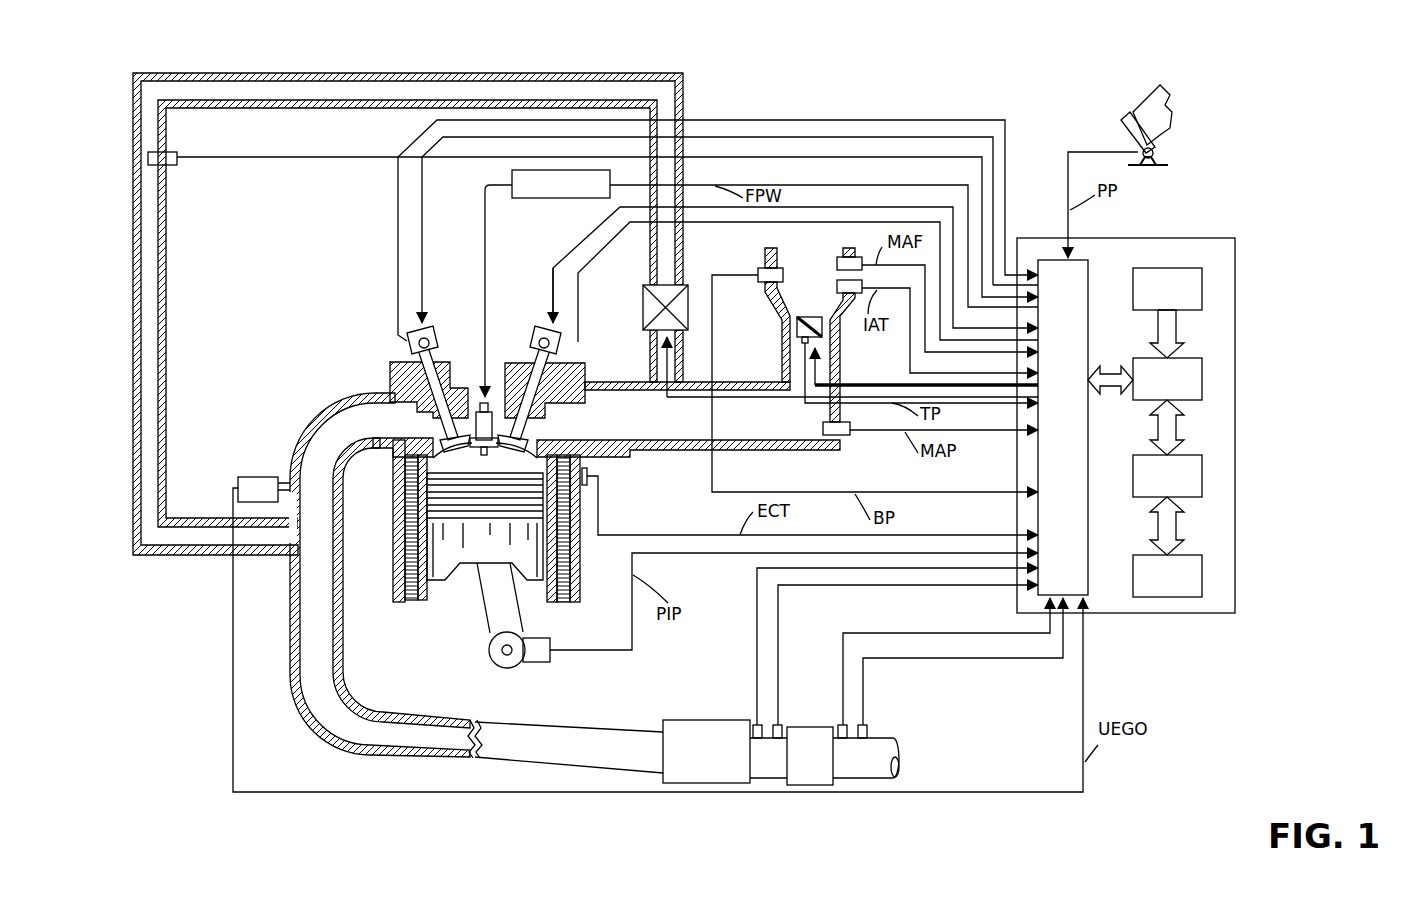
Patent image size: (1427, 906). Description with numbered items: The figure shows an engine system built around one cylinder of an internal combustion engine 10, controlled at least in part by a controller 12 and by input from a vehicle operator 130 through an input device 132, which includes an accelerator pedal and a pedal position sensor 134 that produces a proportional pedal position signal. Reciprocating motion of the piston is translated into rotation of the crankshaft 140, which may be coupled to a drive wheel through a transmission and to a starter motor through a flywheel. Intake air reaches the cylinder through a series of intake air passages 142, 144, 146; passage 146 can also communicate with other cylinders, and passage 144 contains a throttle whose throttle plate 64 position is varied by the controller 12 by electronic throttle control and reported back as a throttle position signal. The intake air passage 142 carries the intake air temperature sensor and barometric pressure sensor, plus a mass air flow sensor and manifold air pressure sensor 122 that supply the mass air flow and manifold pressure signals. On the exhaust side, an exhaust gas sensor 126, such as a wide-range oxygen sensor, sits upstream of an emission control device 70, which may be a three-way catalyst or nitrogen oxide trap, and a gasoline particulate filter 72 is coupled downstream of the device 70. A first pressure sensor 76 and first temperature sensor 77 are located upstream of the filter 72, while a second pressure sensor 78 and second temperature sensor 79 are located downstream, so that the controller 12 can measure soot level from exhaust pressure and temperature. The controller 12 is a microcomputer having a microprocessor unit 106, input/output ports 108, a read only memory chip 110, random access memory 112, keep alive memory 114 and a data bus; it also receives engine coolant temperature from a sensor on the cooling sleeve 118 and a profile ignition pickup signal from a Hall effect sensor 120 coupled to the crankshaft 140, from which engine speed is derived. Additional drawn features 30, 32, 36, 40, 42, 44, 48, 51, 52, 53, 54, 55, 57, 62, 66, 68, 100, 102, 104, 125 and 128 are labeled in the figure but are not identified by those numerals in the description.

The internal combustion engine 10 is at (325, 318).
The controller 12 is at (1238, 240).
The combustion chamber 30 is at (462, 462).
The cylinder walls 32 is at (433, 587).
The piston 36 is at (470, 555).
The crankshaft 40 is at (500, 668).
The intake passage 42 is at (810, 352).
The intake manifold 44 is at (688, 419).
The exhaust passage 48 is at (476, 583).
The intake cam actuator 51 is at (540, 335).
The intake valve 52 is at (528, 425).
The exhaust cam actuator 53 is at (430, 335).
The exhaust valve 54 is at (443, 423).
The intake valve position sensor 55 is at (555, 350).
The exhaust valve position sensor 57 is at (416, 350).
The throttle 62 is at (822, 330).
The throttle plate 64 is at (795, 320).
The fuel injector 66 is at (490, 395).
The electronic driver 68 is at (590, 200).
The emission control device 70 is at (725, 751).
The gasoline particulate filter 72 is at (843, 756).
The first pressure sensor 76 is at (756, 724).
The first temperature sensor 77 is at (780, 724).
The second pressure sensor 78 is at (840, 727).
The second temperature sensor 79 is at (866, 727).
The engine system 100 is at (1335, 112).
The microprocessor unit (CPU) 102 is at (1205, 375).
The input/output ports 104 is at (1092, 265).
The microprocessor unit 106 is at (1205, 285).
The input/output ports 108 is at (1205, 475).
The read only memory chip 110 is at (1205, 572).
The random access memory 112 is at (596, 486).
The keep alive memory 114 is at (573, 555).
The cooling sleeve 118 is at (542, 662).
The Hall effect sensor 120 is at (840, 260).
The manifold air pressure sensor 122 is at (848, 437).
The intake air temperature sensor 125 is at (837, 288).
The exhaust gas sensor 126 is at (238, 488).
The barometric pressure sensor 128 is at (758, 272).
The vehicle operator 130 is at (1130, 135).
The input device 132 is at (1172, 110).
The pedal position sensor 134 is at (1165, 153).
The crankshaft 140 is at (545, 68).
The intake air passage 142 is at (408, 74).
The intake air passage 144 is at (643, 305).
The intake air passage 146 is at (170, 165).